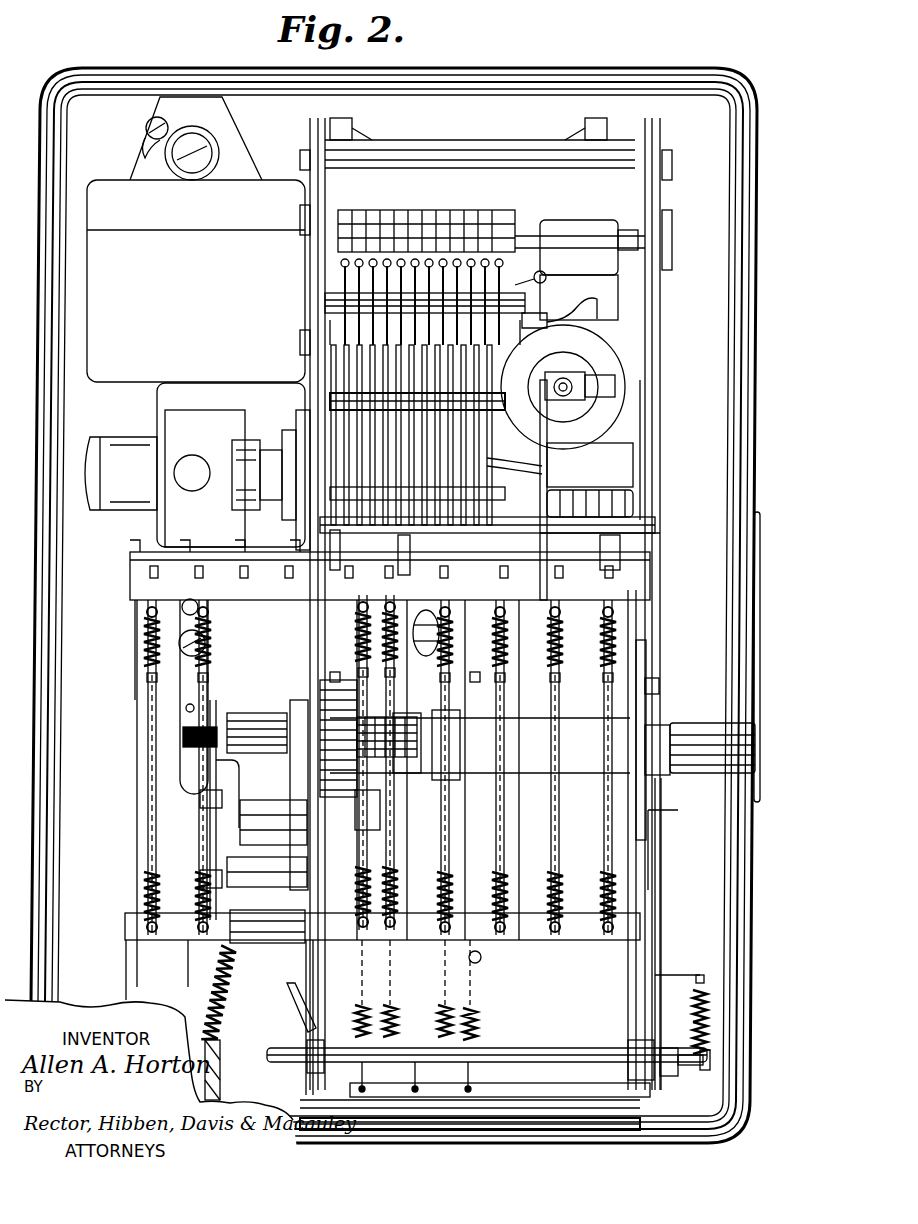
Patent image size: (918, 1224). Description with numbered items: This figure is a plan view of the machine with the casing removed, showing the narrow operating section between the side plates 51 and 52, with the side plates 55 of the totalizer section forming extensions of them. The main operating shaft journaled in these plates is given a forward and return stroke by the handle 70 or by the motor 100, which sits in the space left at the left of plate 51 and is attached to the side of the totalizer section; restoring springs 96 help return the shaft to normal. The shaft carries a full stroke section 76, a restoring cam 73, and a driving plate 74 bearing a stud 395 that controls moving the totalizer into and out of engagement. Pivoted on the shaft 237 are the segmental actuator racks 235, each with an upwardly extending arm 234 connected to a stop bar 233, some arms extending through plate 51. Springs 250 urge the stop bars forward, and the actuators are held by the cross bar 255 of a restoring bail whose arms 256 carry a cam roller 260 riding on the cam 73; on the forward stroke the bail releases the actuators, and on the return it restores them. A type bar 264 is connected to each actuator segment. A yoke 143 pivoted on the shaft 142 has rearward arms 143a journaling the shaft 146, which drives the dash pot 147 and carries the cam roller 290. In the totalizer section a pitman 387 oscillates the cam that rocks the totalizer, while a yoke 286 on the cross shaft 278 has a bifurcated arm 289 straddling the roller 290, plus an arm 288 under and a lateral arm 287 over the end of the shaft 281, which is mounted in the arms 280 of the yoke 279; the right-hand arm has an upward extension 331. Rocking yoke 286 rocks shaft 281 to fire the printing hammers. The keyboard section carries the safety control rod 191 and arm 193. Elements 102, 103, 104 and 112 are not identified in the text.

The motor 100 is at (196, 239).
The operating knob assembly 102 is at (278, 426).
The knob shaft plate 103 is at (292, 506).
The side plates 55 is at (658, 221).
The yoke 279 is at (462, 217).
The arms 280 is at (510, 214).
The cross shaft 278 is at (520, 236).
The yoke 286 is at (582, 222).
The upward extension 331 is at (543, 274).
The shaft 281 is at (566, 306).
The arm 289 is at (654, 288).
The lateral arm 287 is at (535, 314).
The arm 288 is at (546, 316).
The type bar 264 is at (330, 374).
The arms 256 is at (333, 392).
The shaft 237 is at (487, 543).
The dash pot 147 is at (610, 354).
The shaft 146 is at (563, 387).
The cross bar 255 is at (520, 419).
The cam roller 290 is at (572, 490).
The rearwardly extending arms 143a is at (590, 465).
The yoke 143 is at (610, 494).
The segmental actuator racks 235 is at (531, 473).
The pitman 387 is at (654, 440).
The shaft 142 is at (625, 516).
The handle 70 is at (764, 540).
The arm 234 is at (134, 564).
The stop bar 233 is at (136, 831).
The springs 250 is at (505, 878).
The cam roller 260 is at (456, 690).
The restoring cam 73 is at (444, 735).
The lever 112 is at (198, 682).
The knurled knob 104 is at (250, 726).
The full stroke section 76 is at (324, 811).
The stud 395 is at (660, 684).
The driving plate 74 is at (646, 702).
The side plate 52 is at (642, 890).
The side plate 51 is at (308, 1030).
The rod 191 is at (596, 1054).
The restoring springs 96 is at (470, 1022).
The arm 193 is at (287, 986).